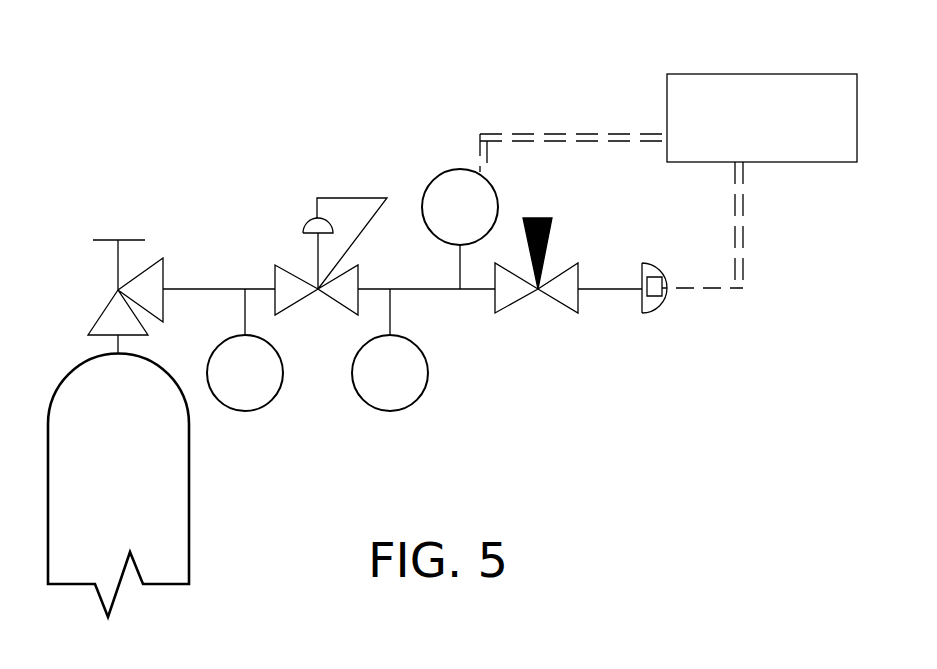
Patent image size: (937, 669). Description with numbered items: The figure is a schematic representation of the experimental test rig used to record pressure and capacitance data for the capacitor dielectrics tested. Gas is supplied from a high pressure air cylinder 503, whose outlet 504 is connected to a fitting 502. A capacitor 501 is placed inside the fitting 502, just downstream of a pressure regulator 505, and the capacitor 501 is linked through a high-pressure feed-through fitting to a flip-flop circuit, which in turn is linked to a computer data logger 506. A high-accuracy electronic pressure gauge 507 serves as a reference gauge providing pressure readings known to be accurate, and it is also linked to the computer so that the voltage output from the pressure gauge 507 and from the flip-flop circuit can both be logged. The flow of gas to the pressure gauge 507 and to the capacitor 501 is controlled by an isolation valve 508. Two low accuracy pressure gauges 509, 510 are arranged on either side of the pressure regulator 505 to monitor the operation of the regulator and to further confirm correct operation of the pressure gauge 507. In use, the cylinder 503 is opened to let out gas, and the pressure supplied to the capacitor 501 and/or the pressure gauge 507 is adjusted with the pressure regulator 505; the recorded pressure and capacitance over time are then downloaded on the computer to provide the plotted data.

The capacitor 501 is at (660, 300).
The fitting 502 is at (482, 376).
The high pressure air cylinder 503 is at (189, 525).
The outlet 504 is at (116, 290).
The pressure regulator 505 is at (320, 292).
The computer data logger 506 is at (821, 74).
The high-accuracy electronic pressure gauge 507 is at (498, 200).
The isolation valve 508 is at (538, 292).
The low accuracy pressure gauge 509 is at (392, 411).
The low accuracy pressure gauge 510 is at (245, 411).